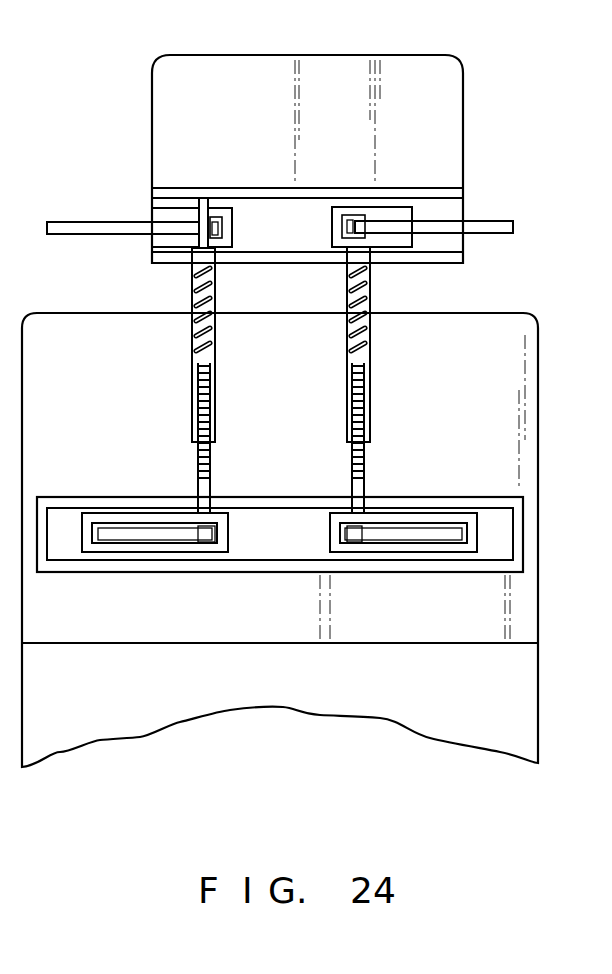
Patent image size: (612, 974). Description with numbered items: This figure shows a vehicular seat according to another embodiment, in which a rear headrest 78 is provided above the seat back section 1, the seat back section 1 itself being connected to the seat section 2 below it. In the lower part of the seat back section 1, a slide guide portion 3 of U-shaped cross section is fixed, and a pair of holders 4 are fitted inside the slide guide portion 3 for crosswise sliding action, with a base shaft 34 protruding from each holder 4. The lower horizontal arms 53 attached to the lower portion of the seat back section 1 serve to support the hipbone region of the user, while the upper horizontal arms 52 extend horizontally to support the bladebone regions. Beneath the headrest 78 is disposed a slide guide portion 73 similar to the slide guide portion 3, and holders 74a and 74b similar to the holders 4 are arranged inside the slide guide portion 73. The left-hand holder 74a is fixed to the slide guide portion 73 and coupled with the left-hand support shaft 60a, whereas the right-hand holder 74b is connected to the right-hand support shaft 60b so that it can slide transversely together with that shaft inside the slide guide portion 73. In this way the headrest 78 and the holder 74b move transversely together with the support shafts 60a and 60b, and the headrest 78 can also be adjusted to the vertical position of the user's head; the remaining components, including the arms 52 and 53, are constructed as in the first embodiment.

The seat back section 1 is at (530, 412).
The seat section 2 is at (527, 690).
The slide guide portion 3 is at (525, 521).
The holder 4 is at (145, 553).
The base shaft 34 is at (200, 484).
The upper horizontal arm 52 is at (86, 228).
The lower horizontal arm 53 is at (112, 535).
The left-hand support shaft 60a is at (196, 340).
The right-hand support shaft 60b is at (366, 366).
The slide guide portion 73 is at (430, 250).
The left-hand holder 74a is at (232, 208).
The right-hand holder 74b is at (328, 207).
The rear headrest 78 is at (407, 62).